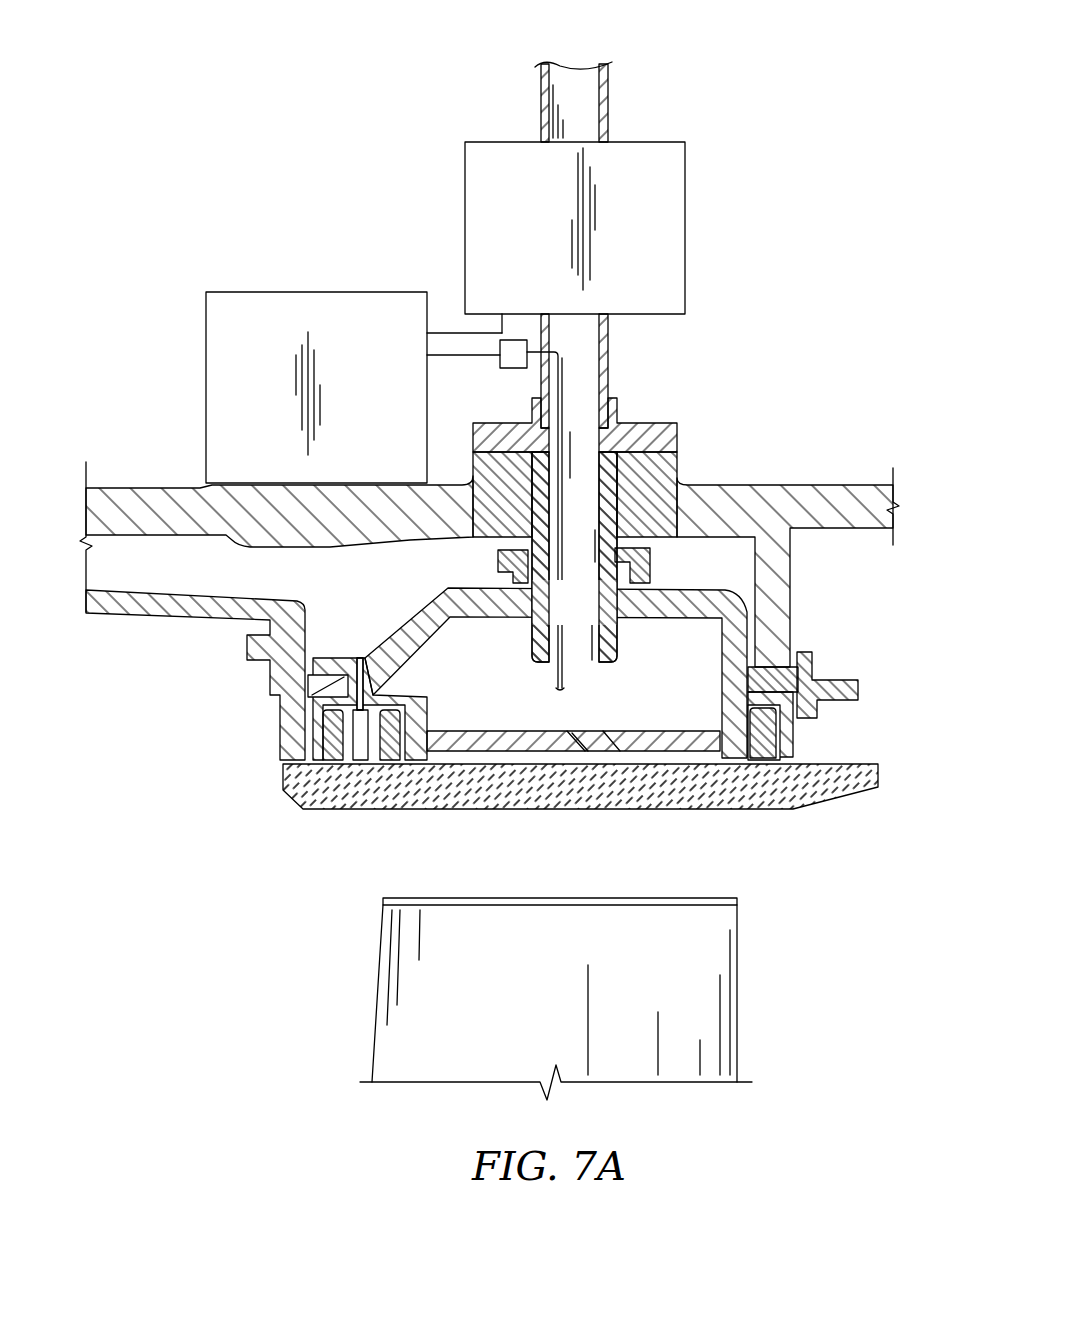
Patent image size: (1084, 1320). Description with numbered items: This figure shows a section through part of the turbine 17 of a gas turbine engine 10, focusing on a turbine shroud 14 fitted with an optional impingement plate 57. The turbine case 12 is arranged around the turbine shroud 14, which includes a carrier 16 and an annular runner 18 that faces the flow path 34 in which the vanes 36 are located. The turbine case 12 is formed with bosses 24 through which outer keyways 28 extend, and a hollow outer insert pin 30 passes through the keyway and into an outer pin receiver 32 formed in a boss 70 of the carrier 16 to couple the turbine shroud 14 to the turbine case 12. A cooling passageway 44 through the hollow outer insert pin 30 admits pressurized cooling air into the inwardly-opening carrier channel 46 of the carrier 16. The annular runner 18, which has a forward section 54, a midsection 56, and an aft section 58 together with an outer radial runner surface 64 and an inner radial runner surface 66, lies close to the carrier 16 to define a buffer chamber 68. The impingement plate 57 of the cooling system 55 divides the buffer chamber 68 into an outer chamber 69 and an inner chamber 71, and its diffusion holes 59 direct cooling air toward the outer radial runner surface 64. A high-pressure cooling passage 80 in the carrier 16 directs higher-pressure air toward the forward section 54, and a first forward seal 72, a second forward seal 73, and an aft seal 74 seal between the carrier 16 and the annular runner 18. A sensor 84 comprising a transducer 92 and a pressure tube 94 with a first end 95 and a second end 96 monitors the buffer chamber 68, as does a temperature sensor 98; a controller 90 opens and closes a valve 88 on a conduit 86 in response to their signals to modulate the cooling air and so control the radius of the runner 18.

The gas turbine engine 10 is at (262, 126).
The turbine case 12 is at (133, 483).
The turbine shroud 14 is at (744, 589).
The carrier 16 is at (719, 581).
The turbine 17 is at (223, 158).
The annular runner 18 is at (743, 816).
The bosses 24 is at (680, 470).
The outer keyways 28 is at (586, 524).
The outer insert pins 30 is at (662, 423).
The outer pin receivers 32 is at (632, 565).
The flow path 34 is at (321, 845).
The vanes 36 is at (700, 1013).
The cooling passageway 44 is at (576, 350).
The inwardly-opening carrier channel 46 is at (675, 639).
The forward section 54 is at (281, 800).
The cooling system 55 is at (410, 222).
The midsection 56 is at (568, 818).
The impingement plate 57 is at (494, 745).
The aft section 58 is at (874, 801).
The diffusion holes 59 is at (578, 734).
The outer radial runner surface 64 is at (862, 763).
The inner radial runner surface 66 is at (822, 800).
The buffer chamber 68 is at (685, 687).
The outer chamber 69 is at (686, 717).
The bosses 70 is at (498, 580).
The inner chamber 71 is at (697, 757).
The first forward seal 72 is at (332, 728).
The second forward seal 73 is at (388, 748).
The aft seal 74 is at (774, 748).
The high-pressure cooling passage 80 is at (361, 655).
The sensor 84 is at (505, 388).
The conduit 86 is at (609, 360).
The valve 88 is at (687, 210).
The controller 90 is at (306, 292).
The transducer 92 is at (500, 362).
The pressure tube 94 is at (565, 639).
The first end 95 is at (530, 352).
The second end 96 is at (562, 680).
The temperature sensor 98 is at (556, 688).